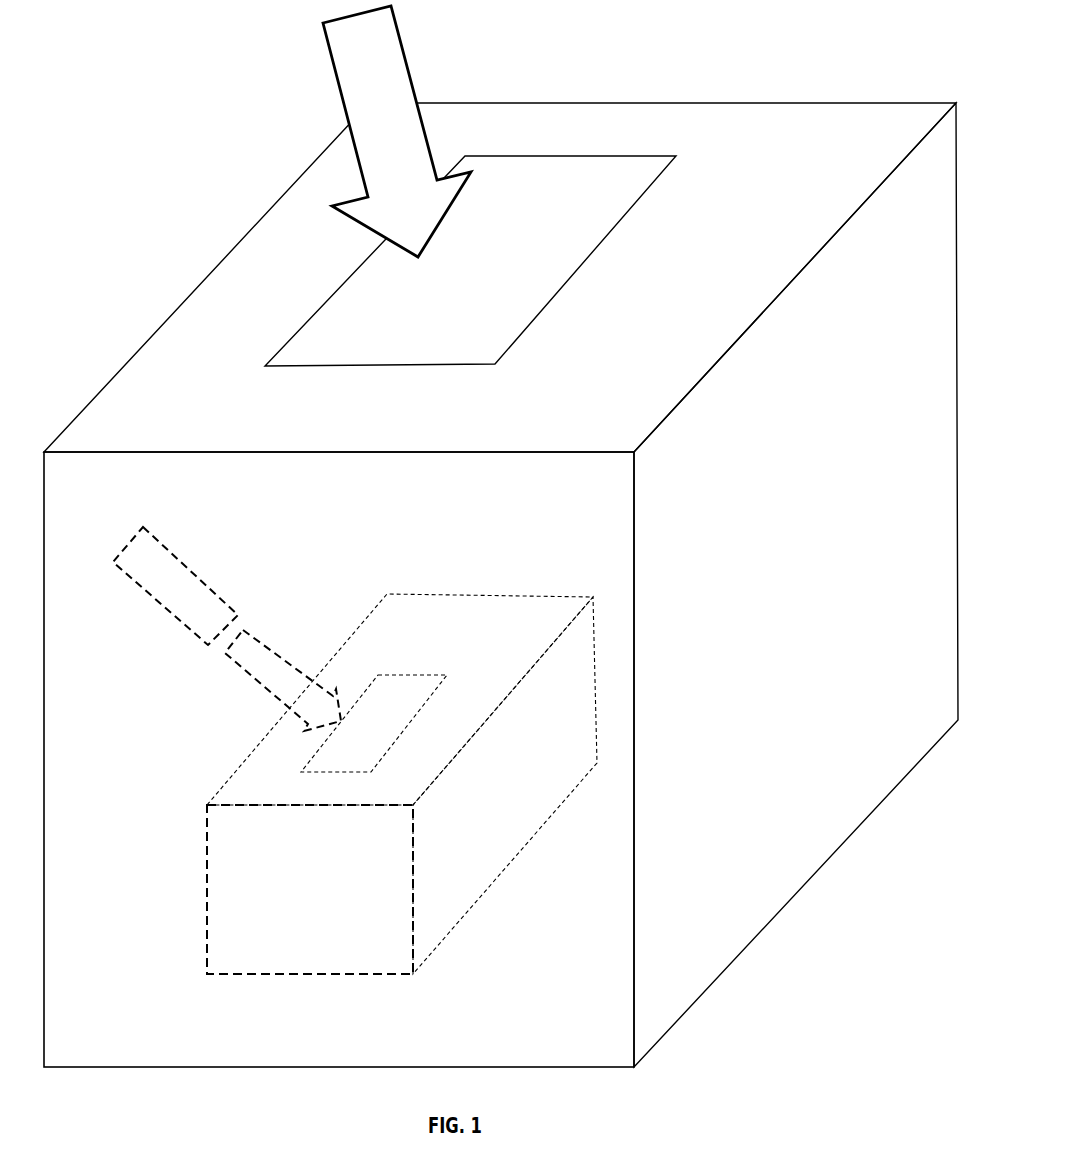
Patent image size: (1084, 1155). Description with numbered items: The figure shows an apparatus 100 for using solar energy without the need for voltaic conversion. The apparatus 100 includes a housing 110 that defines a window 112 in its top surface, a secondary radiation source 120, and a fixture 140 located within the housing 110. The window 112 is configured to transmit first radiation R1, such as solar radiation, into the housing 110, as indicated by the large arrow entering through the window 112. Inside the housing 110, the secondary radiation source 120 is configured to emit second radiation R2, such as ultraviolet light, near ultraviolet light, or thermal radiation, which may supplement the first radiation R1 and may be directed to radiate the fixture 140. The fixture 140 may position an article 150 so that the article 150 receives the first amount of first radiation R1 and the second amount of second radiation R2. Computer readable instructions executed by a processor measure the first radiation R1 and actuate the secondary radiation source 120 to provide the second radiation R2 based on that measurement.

The apparatus 100 is at (501, 536).
The housing 110 is at (182, 360).
The window 112 is at (566, 219).
The secondary radiation source 120 is at (174, 589).
The fixture 140 is at (400, 657).
The article 150 is at (401, 686).
The first radiation R1 is at (379, 108).
The second radiation R2 is at (257, 666).